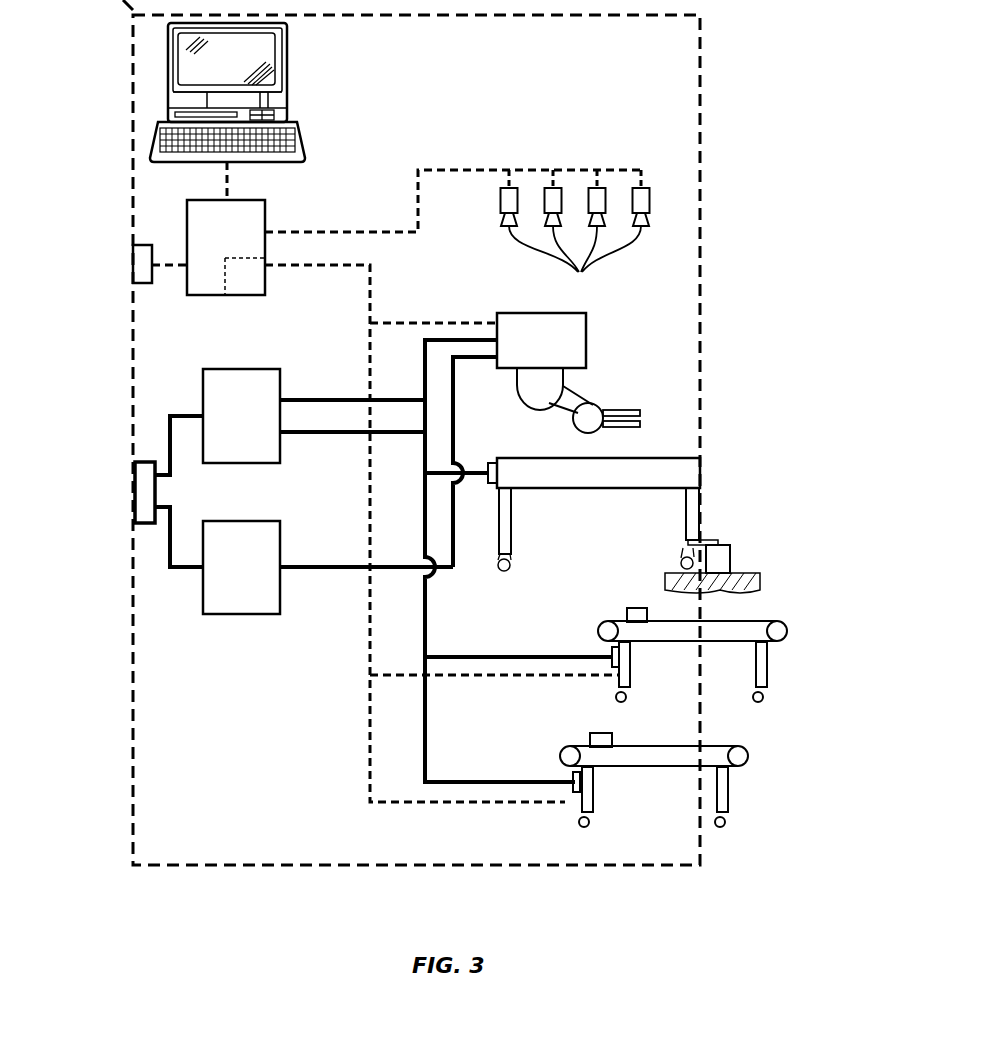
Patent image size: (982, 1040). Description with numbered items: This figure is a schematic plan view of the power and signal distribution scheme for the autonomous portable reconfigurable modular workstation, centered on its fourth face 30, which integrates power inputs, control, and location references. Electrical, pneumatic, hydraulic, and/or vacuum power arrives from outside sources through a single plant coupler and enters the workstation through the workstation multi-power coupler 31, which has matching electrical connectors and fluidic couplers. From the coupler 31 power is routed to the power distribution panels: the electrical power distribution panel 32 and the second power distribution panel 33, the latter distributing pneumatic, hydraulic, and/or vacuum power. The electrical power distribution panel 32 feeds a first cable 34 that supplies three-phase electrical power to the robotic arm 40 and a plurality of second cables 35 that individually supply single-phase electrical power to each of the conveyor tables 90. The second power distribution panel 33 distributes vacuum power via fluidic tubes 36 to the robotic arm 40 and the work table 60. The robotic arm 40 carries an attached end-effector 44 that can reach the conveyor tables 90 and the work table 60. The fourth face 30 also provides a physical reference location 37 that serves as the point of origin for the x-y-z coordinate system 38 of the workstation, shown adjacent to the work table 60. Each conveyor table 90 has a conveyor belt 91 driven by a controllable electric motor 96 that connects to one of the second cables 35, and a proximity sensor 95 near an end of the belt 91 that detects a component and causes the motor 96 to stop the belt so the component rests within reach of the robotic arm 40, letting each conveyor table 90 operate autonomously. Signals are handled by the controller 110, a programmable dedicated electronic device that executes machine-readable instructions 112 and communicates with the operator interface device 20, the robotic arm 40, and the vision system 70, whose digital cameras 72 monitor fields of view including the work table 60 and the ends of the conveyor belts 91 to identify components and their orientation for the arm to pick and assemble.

The operator interface device 20 is at (278, 60).
The fourth face 30 is at (700, 212).
The workstation multi-power coupler 31 is at (140, 495).
The electrical power distribution panel 32 is at (257, 432).
The second power distribution panel 33 is at (257, 584).
The first cable 34 is at (322, 400).
The second cables 35 is at (316, 434).
The fluidic tubes 36 is at (333, 567).
The physical reference location 37 is at (732, 553).
The x-y-z coordinate system 38 is at (700, 540).
The robotic arm 40 is at (572, 340).
The end-effector 44 is at (627, 408).
The work table 60 is at (688, 473).
The vision system 70 is at (546, 170).
The digital cameras 72 is at (575, 263).
The conveyor tables 90 is at (776, 650).
The conveyor belt 91 is at (757, 620).
The proximity sensor 95 is at (635, 607).
The electric motor 96 is at (597, 630).
The controller 110 is at (247, 257).
The machine-readable instructions 112 is at (262, 288).